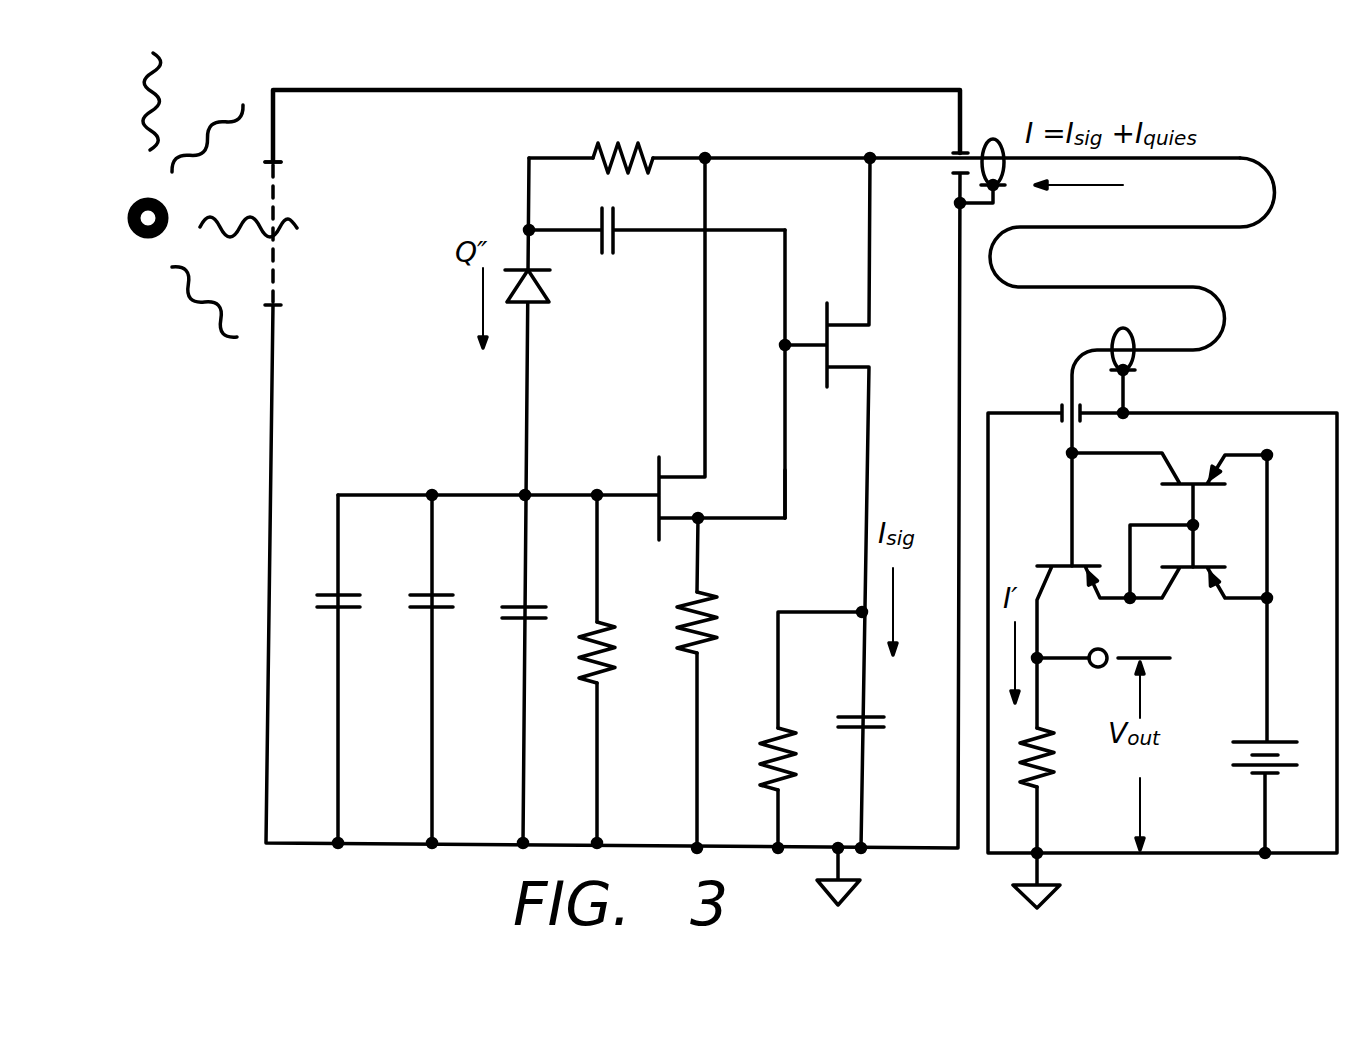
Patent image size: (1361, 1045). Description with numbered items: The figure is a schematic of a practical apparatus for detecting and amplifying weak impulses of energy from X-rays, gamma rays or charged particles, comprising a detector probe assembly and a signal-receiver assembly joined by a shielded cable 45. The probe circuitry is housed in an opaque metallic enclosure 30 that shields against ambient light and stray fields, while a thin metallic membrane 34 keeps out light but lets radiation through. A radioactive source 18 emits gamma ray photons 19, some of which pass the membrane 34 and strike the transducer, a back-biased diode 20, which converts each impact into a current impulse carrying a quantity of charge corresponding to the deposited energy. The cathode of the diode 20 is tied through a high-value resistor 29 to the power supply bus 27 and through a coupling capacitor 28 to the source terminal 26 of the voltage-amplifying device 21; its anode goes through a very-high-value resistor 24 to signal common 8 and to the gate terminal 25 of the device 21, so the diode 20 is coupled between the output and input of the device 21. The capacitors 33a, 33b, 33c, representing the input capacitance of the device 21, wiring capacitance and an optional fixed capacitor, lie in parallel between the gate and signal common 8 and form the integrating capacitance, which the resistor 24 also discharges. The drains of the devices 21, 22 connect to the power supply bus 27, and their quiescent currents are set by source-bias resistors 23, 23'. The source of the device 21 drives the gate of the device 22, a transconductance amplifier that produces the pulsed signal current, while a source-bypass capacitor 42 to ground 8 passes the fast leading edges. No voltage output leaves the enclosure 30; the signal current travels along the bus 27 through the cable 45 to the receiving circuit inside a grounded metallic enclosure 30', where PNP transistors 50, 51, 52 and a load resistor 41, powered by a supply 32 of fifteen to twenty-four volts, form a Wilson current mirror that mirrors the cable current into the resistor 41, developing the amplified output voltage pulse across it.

The signal common 8 is at (855, 888).
The radioactive source 18 is at (136, 239).
The gamma ray photons 19 is at (242, 195).
The diode 20 is at (553, 293).
The voltage-amplifying device 21 is at (713, 506).
The device 22 is at (845, 503).
The source-bias resistor 23 is at (707, 685).
The source-bias resistor 23' is at (791, 730).
The resistor 24 is at (610, 669).
The terminal 25 is at (628, 485).
The terminal 26 is at (772, 525).
The power supply bus 27 is at (884, 140).
The coupling capacitor 28 is at (657, 227).
The resistor 29 is at (605, 145).
The metallic enclosure 30 is at (567, 469).
The metallic enclosure 30' is at (1162, 664).
The power supply 32 is at (1256, 656).
The capacitor 33a is at (540, 669).
The capacitor 33b is at (356, 671).
The capacitor 33c is at (448, 669).
The metallic membrane 34 is at (290, 176).
The load resistor 41 is at (1055, 818).
The source-bypass capacitor 42 is at (875, 785).
The shielded cable 45 is at (1141, 362).
The PNP bipolar junction transistor 50 is at (1082, 627).
The PNP bipolar junction transistor 51 is at (1199, 576).
The PNP bipolar junction transistor 52 is at (1170, 508).